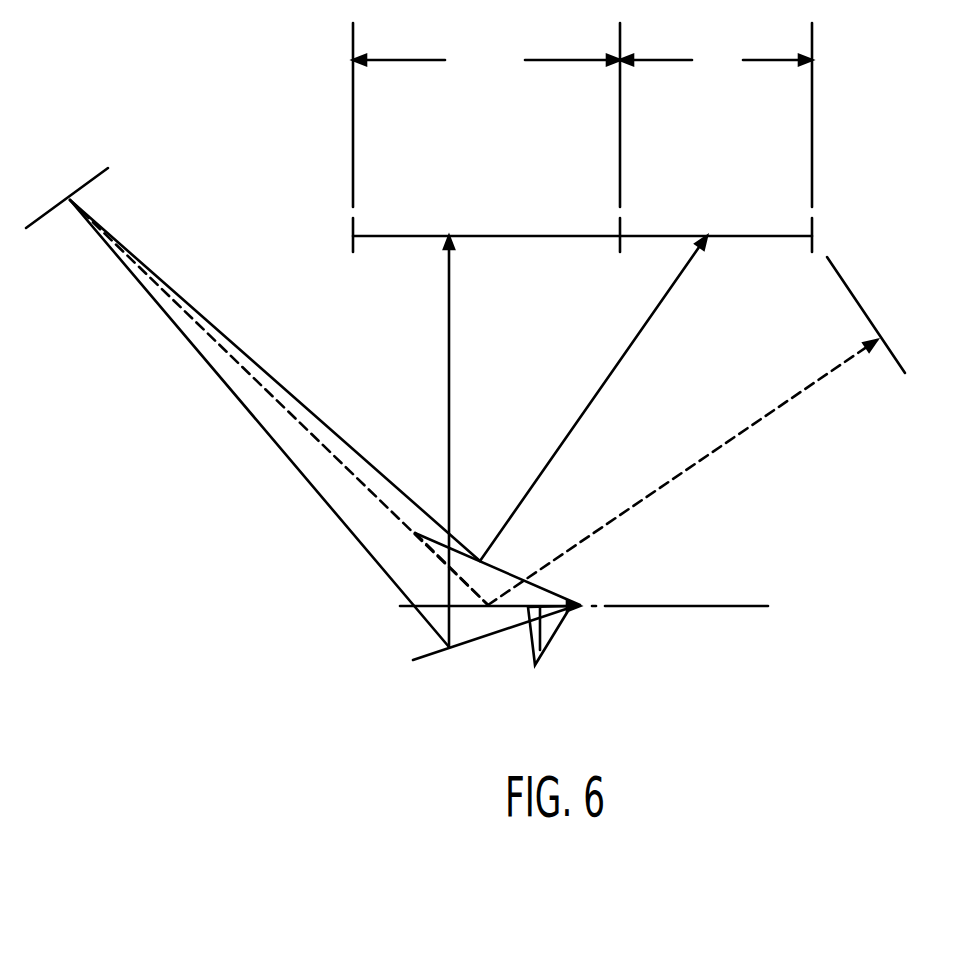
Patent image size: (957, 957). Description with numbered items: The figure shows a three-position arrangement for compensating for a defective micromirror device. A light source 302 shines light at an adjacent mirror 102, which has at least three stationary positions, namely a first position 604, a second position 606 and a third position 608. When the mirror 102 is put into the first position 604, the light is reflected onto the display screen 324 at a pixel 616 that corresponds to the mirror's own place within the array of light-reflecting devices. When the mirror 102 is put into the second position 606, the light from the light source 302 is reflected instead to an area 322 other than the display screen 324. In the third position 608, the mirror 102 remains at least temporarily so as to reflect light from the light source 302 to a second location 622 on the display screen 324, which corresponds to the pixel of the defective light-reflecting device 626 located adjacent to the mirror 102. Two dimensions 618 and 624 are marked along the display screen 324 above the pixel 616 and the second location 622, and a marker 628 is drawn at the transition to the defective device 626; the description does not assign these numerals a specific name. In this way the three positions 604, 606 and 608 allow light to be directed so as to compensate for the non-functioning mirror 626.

The light source 302 is at (87, 180).
The area other than the display screen 322 is at (850, 290).
The display screen 324 is at (537, 231).
The first distance 618 is at (486, 115).
The second distance 624 is at (716, 115).
The pixel 616 is at (451, 232).
The second location 622 is at (708, 232).
The third position 608 is at (557, 592).
The second position 606 is at (402, 608).
The first position 604 is at (421, 662).
The mirror 102 is at (541, 658).
The defective light-reflecting device 626 is at (752, 608).
The gap 628 is at (593, 608).